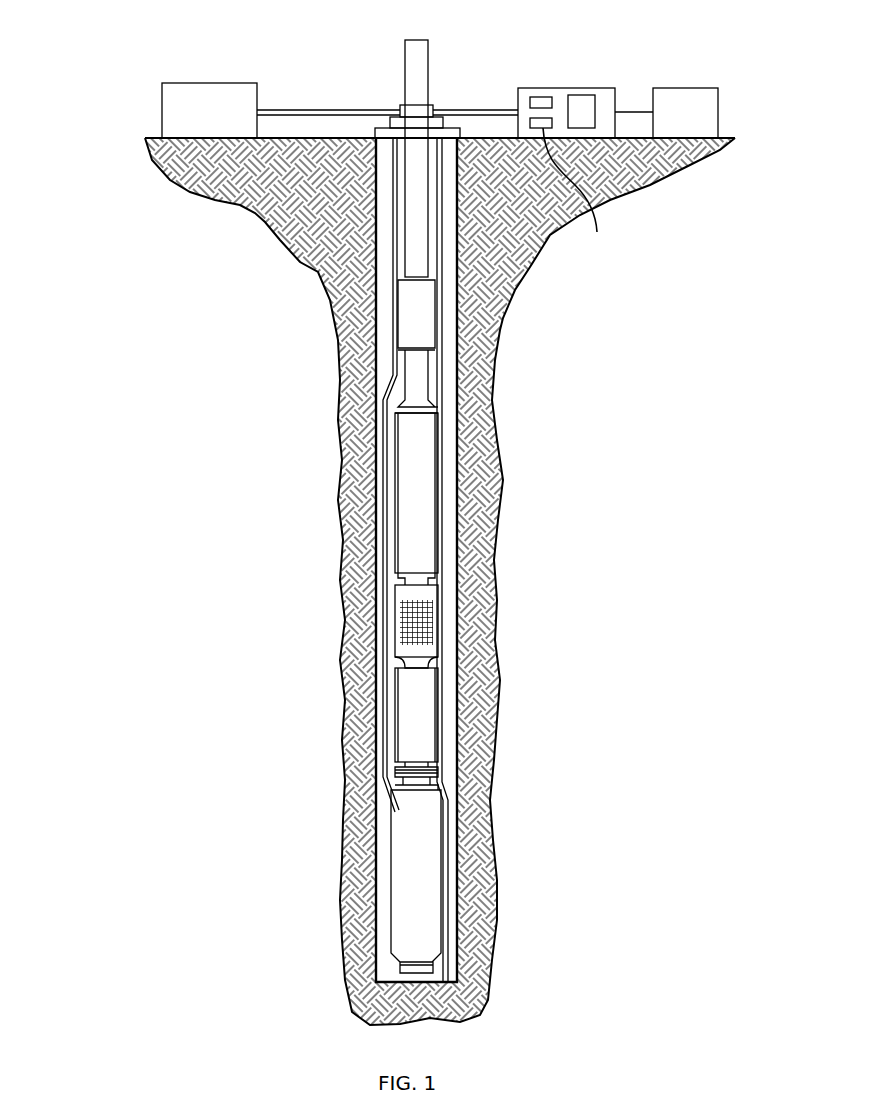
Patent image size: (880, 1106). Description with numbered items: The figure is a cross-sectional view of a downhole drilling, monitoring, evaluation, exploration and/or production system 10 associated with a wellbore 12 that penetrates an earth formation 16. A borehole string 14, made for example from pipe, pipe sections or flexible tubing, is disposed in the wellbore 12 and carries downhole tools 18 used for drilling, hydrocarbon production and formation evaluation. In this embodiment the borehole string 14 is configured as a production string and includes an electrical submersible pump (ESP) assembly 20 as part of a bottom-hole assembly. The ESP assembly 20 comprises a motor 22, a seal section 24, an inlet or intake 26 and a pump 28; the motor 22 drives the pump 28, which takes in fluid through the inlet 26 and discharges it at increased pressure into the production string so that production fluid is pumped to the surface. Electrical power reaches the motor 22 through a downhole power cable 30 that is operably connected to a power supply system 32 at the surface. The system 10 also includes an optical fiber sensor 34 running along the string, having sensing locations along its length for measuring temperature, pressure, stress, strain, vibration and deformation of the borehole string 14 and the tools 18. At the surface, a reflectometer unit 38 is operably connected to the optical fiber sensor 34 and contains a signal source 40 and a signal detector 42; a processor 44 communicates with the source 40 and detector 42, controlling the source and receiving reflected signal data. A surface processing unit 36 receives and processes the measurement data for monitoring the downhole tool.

The downhole drilling, monitoring, evaluation, exploration and/or production system 10 is at (128, 72).
The wellbore 12 is at (455, 300).
The borehole string 14 is at (420, 368).
The earth formation 16 is at (283, 216).
The downhole tools 18 is at (400, 318).
The electrical submersible pump (ESP) assembly 20 is at (508, 532).
The motor 22 is at (400, 882).
The seal section 24 is at (397, 713).
The inlet or intake 26 is at (397, 615).
The pump 28 is at (400, 492).
The downhole power cable 30 is at (385, 763).
The power supply system 32 is at (215, 92).
The optical fiber sensor 34 is at (440, 442).
The surface processing unit 36 is at (688, 98).
The reflectometer unit 38 is at (600, 88).
The signal source 40 is at (540, 100).
The signal detector 42 is at (578, 198).
The processor 44 is at (580, 100).